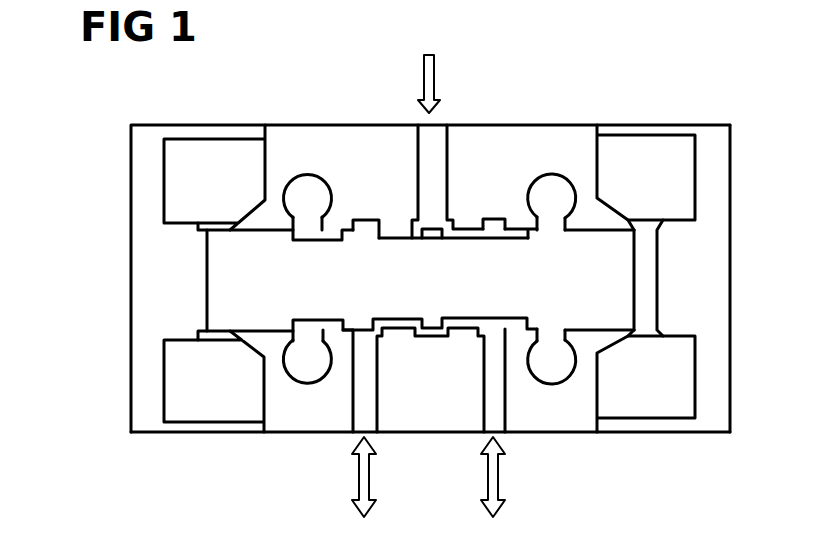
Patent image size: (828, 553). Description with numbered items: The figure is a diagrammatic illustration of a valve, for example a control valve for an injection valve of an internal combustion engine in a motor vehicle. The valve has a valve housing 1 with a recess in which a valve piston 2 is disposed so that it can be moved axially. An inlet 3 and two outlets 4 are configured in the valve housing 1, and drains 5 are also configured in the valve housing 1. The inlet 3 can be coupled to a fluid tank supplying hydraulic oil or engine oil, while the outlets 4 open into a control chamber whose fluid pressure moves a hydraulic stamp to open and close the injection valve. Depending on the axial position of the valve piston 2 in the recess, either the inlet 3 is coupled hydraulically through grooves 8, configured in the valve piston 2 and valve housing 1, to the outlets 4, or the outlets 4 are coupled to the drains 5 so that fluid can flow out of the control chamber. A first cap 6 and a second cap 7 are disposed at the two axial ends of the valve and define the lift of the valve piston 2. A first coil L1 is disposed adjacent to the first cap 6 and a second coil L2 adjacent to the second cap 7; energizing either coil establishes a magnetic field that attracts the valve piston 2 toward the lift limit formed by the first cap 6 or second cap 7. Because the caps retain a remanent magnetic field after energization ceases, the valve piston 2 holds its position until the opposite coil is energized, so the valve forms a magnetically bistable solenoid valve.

The valve housing 1 is at (312, 422).
The valve piston 2 is at (618, 288).
The inlet 3 is at (440, 143).
The outlets 4 is at (363, 418).
The drains 5 is at (306, 190).
The first cap 6 is at (138, 284).
The second cap 7 is at (713, 238).
The grooves 8 is at (403, 237).
The first coil L1 is at (217, 147).
The second coil L2 is at (658, 145).